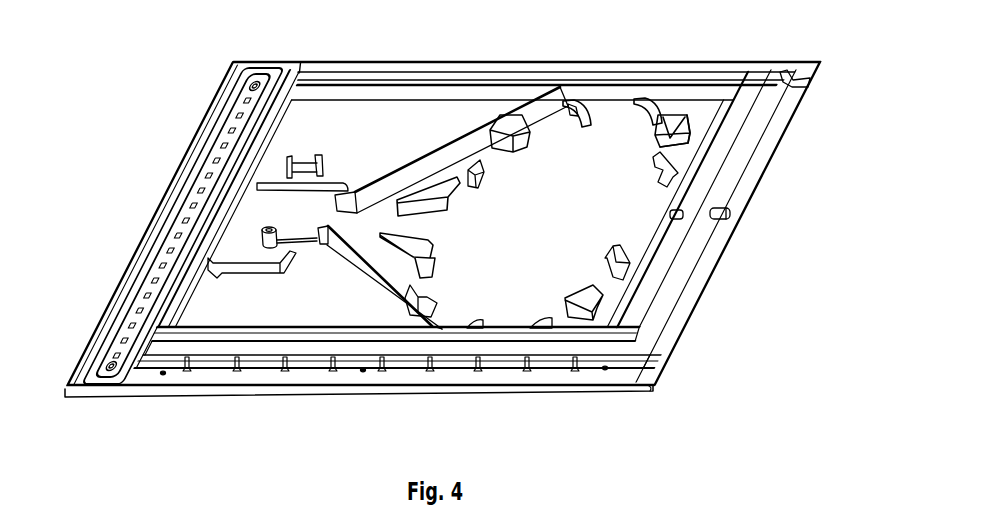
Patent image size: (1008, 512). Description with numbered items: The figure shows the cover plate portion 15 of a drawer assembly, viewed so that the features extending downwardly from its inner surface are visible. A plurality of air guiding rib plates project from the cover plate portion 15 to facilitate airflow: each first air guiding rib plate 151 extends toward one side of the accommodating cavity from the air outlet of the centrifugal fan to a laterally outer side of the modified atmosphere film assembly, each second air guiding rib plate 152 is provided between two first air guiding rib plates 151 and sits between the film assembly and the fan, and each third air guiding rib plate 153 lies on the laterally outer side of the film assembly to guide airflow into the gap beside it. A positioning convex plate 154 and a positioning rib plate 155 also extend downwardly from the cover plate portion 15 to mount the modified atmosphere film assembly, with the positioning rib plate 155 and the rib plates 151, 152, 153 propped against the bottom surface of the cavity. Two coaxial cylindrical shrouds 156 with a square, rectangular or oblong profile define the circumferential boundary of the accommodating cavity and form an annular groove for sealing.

The cover plate portion 15 is at (160, 196).
The first air guiding rib plate 151 is at (446, 139).
The second air guiding rib plate 152 is at (430, 190).
The third air guiding rib plate 153 is at (573, 108).
The positioning convex plate 154 is at (670, 138).
The positioning rib plate 155 is at (688, 127).
The cylindrical shrouds 156 is at (747, 67).